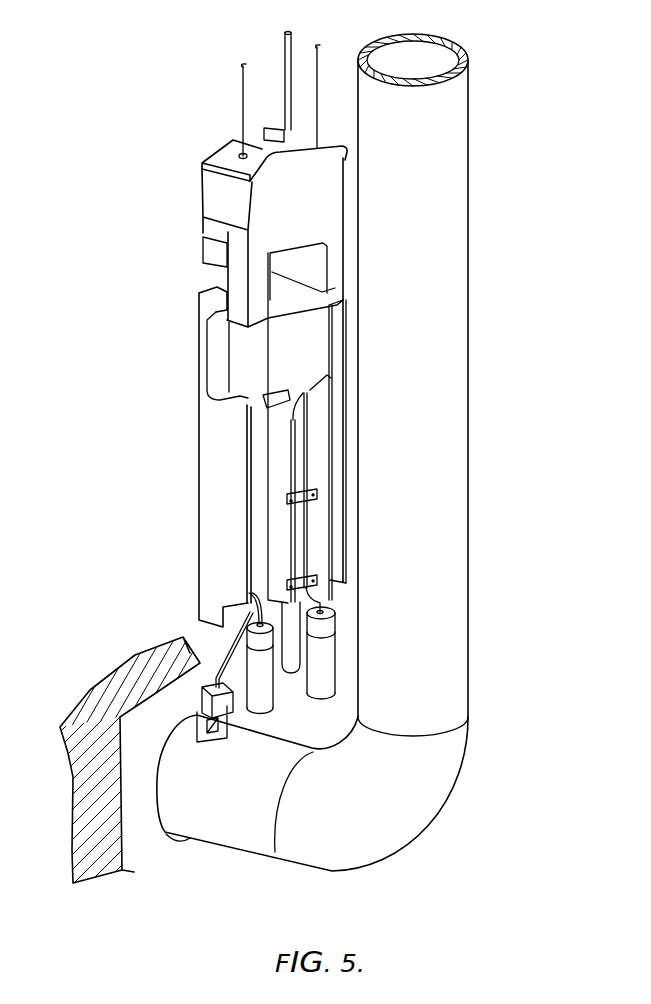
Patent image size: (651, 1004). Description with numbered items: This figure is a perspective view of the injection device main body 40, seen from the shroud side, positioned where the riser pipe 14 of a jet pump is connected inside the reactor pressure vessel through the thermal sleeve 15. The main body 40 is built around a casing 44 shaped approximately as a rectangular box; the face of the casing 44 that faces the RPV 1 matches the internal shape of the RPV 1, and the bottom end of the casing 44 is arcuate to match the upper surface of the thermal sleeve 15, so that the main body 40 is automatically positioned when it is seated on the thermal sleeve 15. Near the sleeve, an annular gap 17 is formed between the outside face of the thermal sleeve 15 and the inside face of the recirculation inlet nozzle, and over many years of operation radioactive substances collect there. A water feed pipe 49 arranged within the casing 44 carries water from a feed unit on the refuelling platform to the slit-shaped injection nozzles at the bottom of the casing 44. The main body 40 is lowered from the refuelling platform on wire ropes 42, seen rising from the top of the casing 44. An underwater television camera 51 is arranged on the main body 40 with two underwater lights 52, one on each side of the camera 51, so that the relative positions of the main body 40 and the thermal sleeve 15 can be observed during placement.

The RPV 1 is at (82, 715).
The riser pipe 14 is at (470, 527).
The thermal sleeve 15 is at (233, 827).
The annular gap 17 is at (178, 843).
The injection device main body 40 is at (258, 393).
The wire ropes 42 is at (319, 66).
The casing 44 is at (205, 428).
The water feed pipe 49 is at (281, 42).
The underwater television camera 51 is at (296, 648).
The underwater lights 52 is at (323, 673).